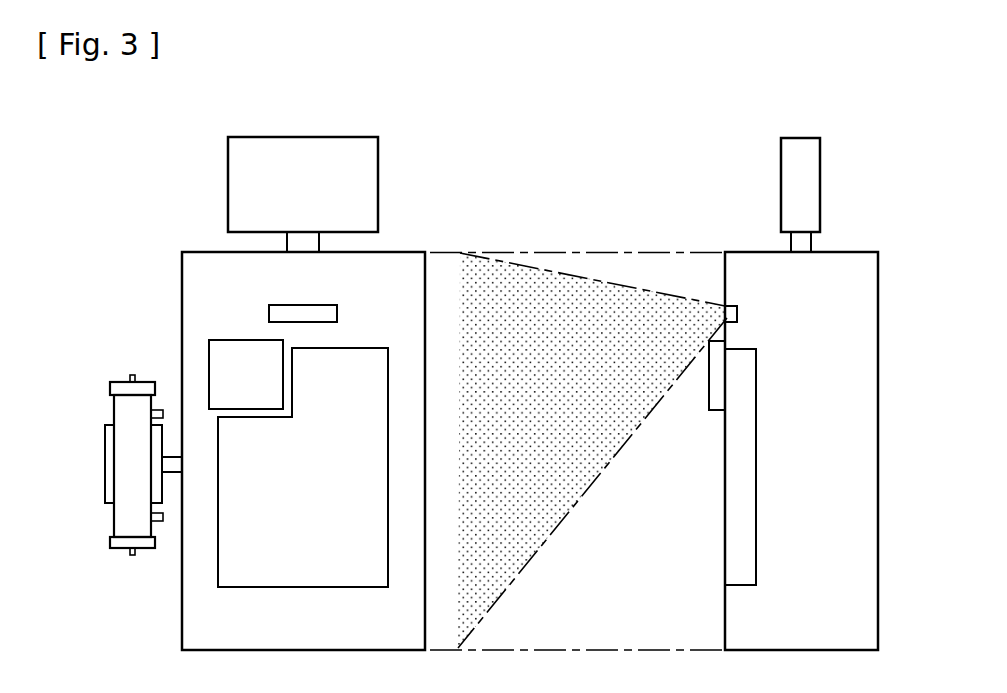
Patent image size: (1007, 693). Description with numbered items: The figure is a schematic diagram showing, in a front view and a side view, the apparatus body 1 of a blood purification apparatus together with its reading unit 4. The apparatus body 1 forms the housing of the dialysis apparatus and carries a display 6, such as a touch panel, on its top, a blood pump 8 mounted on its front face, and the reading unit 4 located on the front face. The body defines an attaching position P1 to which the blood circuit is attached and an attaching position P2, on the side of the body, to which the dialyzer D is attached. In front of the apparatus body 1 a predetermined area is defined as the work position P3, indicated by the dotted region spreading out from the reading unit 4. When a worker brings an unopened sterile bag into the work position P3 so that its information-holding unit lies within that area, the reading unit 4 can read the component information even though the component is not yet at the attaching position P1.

The apparatus body 1 is at (182, 290).
The reading unit 4 is at (337, 313).
The display 6 is at (378, 165).
The blood pump 8 is at (209, 349).
The dialyzer D is at (114, 521).
The attaching position P1 is at (322, 504).
The attaching position P2 is at (105, 457).
The work position P3 is at (560, 394).